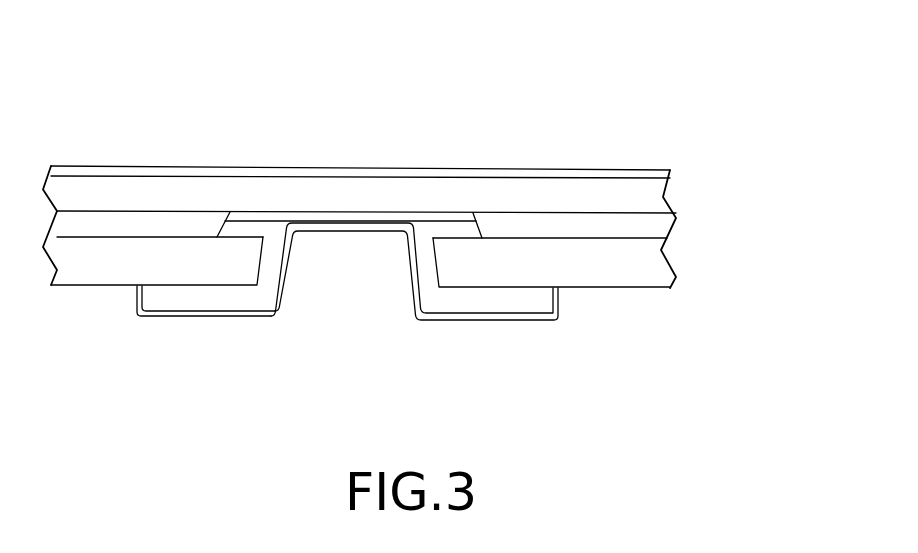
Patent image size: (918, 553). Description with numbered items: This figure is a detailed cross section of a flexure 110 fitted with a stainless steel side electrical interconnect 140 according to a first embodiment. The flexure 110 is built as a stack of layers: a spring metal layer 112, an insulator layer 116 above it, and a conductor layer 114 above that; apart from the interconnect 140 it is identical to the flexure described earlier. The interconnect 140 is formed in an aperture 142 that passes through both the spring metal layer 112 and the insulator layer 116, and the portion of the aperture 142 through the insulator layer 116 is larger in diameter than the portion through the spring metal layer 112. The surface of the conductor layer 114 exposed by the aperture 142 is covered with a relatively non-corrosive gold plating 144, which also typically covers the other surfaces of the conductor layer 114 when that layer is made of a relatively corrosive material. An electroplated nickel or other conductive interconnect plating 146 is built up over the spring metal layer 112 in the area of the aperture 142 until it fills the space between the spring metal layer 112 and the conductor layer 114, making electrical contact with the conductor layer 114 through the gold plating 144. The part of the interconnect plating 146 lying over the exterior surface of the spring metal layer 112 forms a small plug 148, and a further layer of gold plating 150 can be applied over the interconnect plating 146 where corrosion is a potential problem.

The flexure 110 is at (601, 107).
The spring metal layer 112 is at (653, 277).
The conductor layer 114 is at (638, 199).
The insulator layer 116 is at (660, 228).
The interconnect 140 is at (303, 326).
The aperture 142 is at (392, 313).
The gold plating 144 is at (137, 167).
The interconnect plating 146 is at (281, 282).
The plug 148 is at (178, 303).
The gold plating 150 is at (535, 320).